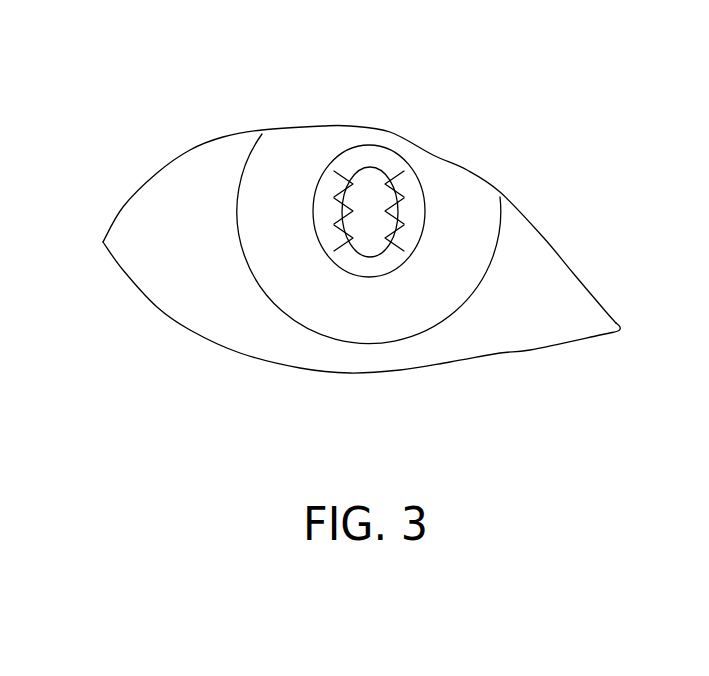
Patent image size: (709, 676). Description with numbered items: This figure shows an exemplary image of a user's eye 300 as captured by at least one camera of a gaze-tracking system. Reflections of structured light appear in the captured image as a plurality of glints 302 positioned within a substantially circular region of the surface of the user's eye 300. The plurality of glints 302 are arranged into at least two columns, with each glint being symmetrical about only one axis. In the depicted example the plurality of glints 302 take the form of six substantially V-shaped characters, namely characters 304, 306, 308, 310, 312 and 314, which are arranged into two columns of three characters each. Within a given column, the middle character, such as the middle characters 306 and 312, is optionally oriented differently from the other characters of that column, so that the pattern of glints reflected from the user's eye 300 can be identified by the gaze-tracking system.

The user's eye 300 is at (541, 235).
The plurality of glints 302 is at (409, 130).
The character 304 is at (386, 185).
The middle character 306 is at (390, 214).
The character 308 is at (390, 238).
The character 310 is at (337, 183).
The middle character 312 is at (335, 210).
The character 314 is at (351, 238).